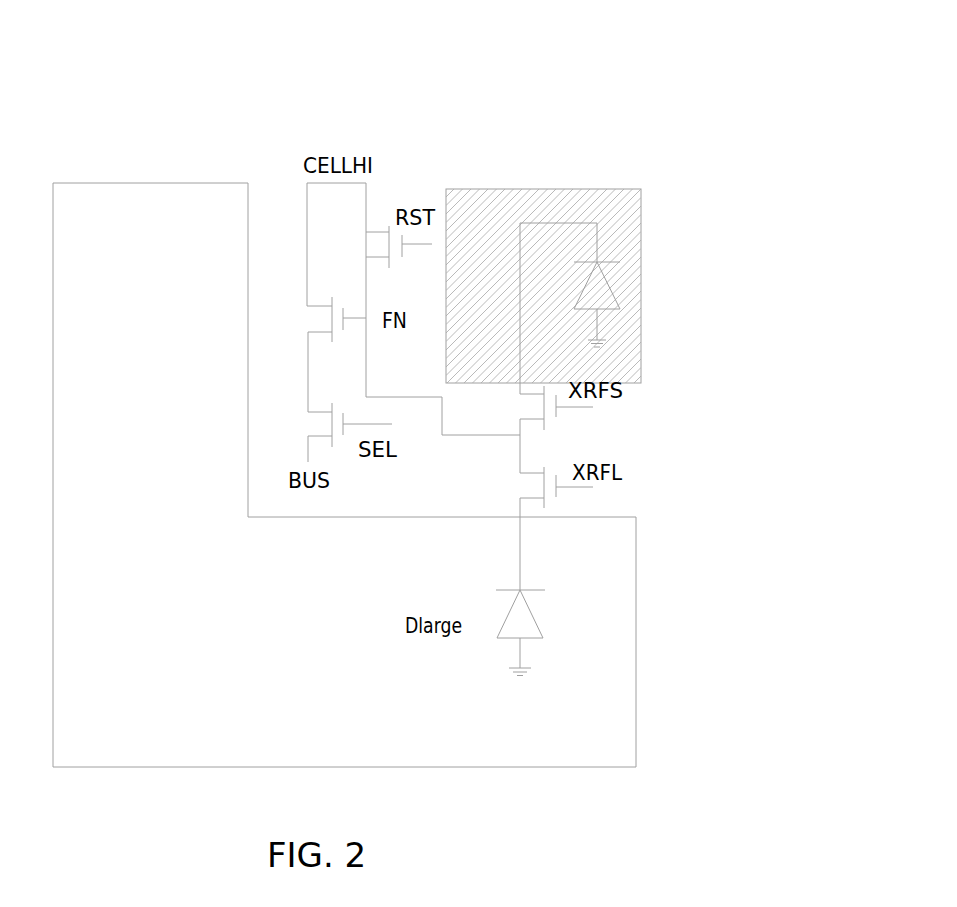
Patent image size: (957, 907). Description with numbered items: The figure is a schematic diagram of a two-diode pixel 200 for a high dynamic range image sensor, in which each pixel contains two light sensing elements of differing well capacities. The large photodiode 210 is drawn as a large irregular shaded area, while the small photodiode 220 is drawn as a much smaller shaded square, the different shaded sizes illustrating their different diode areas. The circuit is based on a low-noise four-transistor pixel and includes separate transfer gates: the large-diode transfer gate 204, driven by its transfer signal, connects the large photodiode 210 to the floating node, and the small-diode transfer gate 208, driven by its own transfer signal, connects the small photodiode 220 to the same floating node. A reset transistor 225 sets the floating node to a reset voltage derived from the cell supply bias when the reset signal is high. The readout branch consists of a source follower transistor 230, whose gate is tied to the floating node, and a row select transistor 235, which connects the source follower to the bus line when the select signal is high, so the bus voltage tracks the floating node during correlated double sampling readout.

The two-diode pixel 200 is at (579, 38).
The large photodiode 210 is at (118, 180).
The small photodiode 220 is at (518, 180).
The reset transistor 225 is at (377, 228).
The source follower transistor 230 is at (315, 305).
The row select transistor 235 is at (315, 410).
The transfer gate Mxl 204 is at (530, 475).
The transfer gate Mxs 208 is at (532, 394).